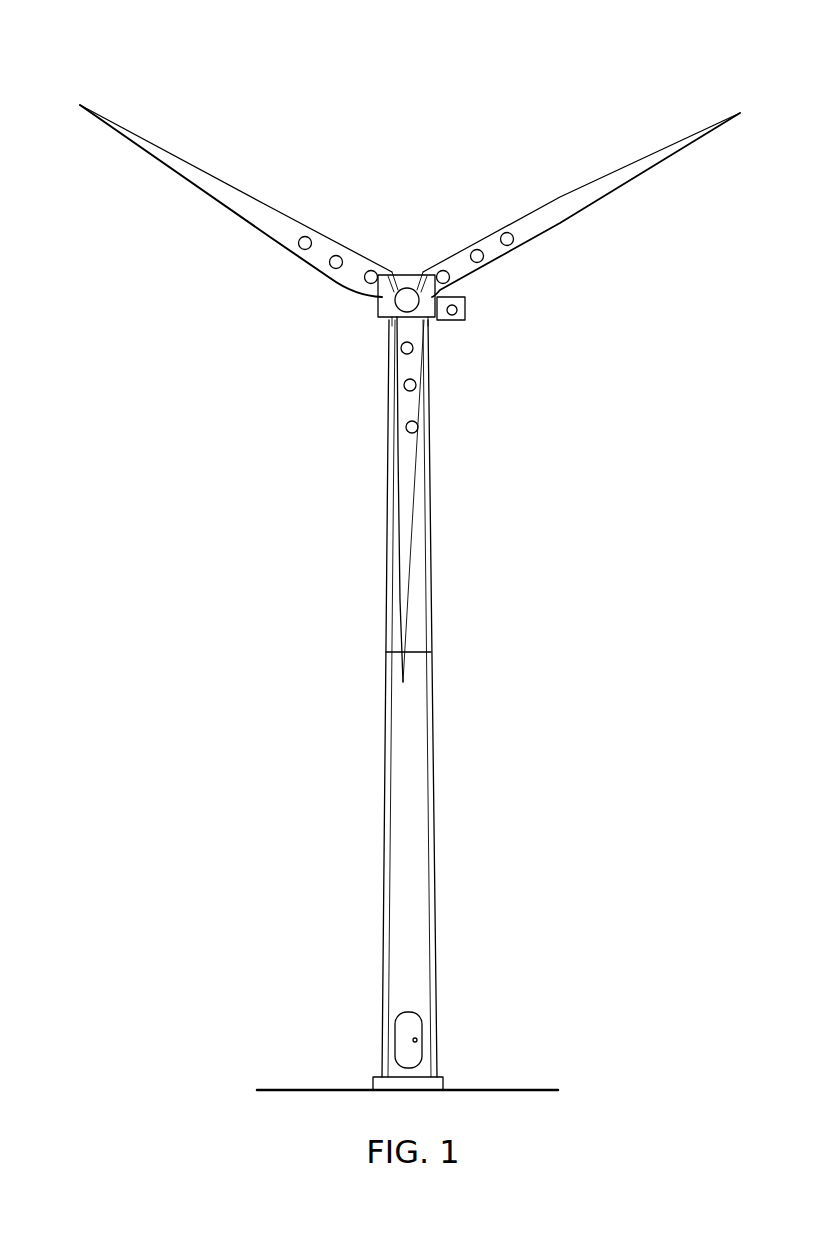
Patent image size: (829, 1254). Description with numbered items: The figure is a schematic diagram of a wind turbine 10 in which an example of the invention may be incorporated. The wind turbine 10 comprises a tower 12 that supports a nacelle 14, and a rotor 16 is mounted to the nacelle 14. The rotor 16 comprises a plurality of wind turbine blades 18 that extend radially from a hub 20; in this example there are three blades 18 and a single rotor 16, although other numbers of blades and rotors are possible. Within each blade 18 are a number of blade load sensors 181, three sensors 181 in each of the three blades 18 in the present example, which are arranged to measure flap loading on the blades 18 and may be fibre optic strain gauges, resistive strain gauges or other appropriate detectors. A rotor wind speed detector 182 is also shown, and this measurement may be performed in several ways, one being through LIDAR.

The wind turbine 10 is at (645, 87).
The tower 12 is at (418, 750).
The nacelle 14 is at (466, 320).
The rotor 16 is at (352, 332).
The wind turbine blade 18 is at (216, 180).
The hub 20 is at (404, 288).
The blade load sensor 181 is at (305, 236).
The rotor wind speed detector 182 is at (463, 297).